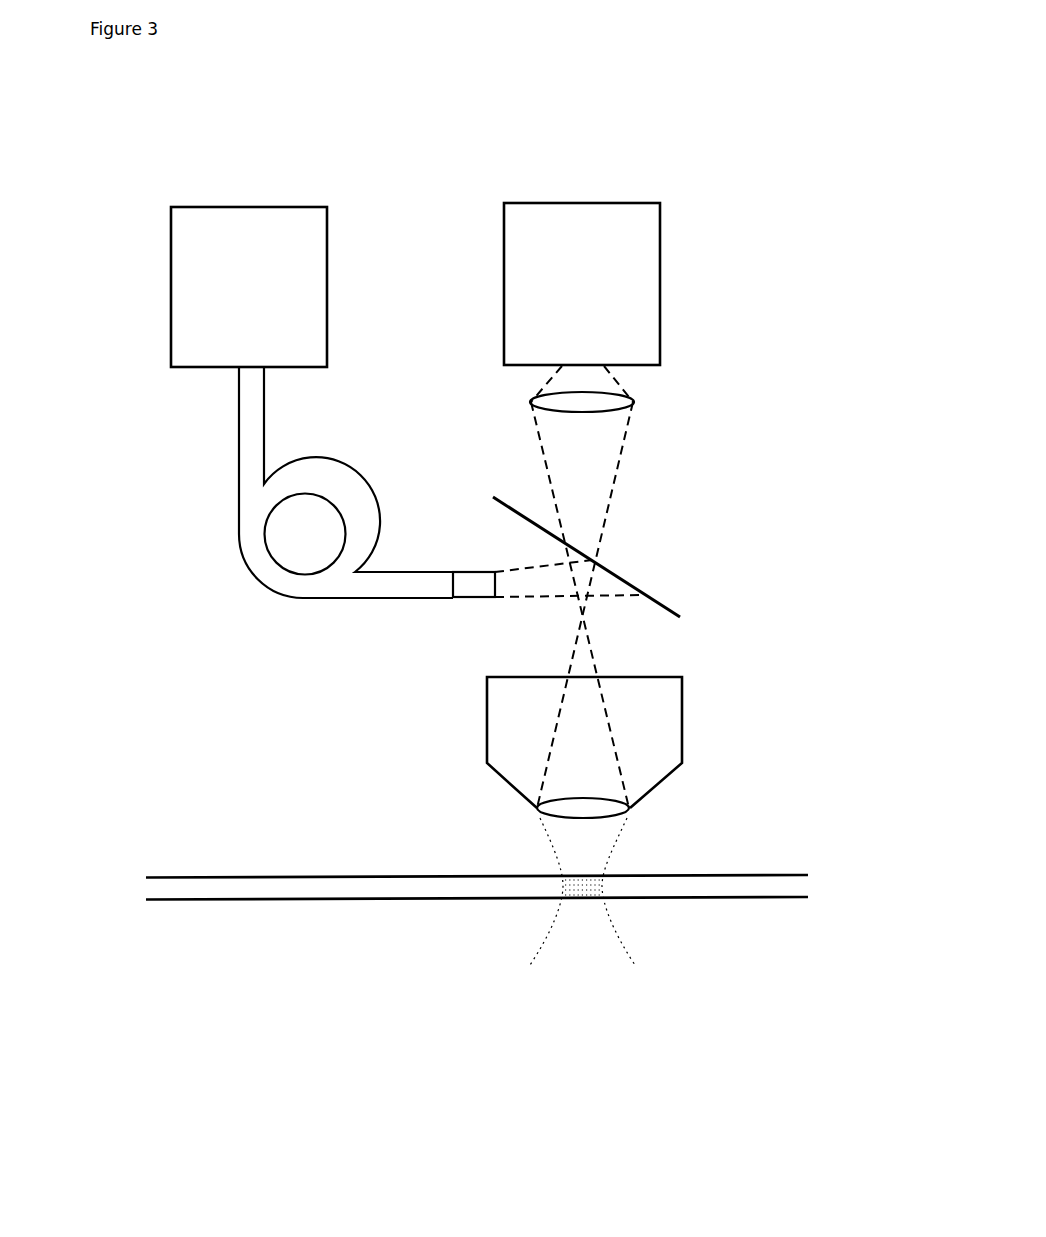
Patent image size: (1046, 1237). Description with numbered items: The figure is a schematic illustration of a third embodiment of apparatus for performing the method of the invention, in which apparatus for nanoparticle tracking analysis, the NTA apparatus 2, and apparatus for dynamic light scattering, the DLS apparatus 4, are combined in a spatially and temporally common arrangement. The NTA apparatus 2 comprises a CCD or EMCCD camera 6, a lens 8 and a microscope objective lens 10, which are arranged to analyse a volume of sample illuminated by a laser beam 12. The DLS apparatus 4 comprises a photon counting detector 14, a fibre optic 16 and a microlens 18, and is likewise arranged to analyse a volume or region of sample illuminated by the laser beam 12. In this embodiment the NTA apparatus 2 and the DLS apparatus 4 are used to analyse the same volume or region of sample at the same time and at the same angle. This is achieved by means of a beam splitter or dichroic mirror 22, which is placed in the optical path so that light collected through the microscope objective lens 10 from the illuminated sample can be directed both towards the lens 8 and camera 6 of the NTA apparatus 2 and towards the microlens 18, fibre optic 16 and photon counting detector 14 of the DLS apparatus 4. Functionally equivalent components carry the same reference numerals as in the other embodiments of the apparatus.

The NTA apparatus 2 is at (593, 188).
The DLS apparatus 4 is at (252, 188).
The CCD or EMCCD camera 6 is at (663, 290).
The lens 8 is at (640, 401).
The microscope objective lens 10 is at (684, 745).
The laser beam 12 is at (655, 902).
The photon counting detector 14 is at (168, 280).
The fibre optic 16 is at (240, 598).
The microlens 18 is at (477, 605).
The beam splitter or dichroic mirror 22 is at (632, 583).